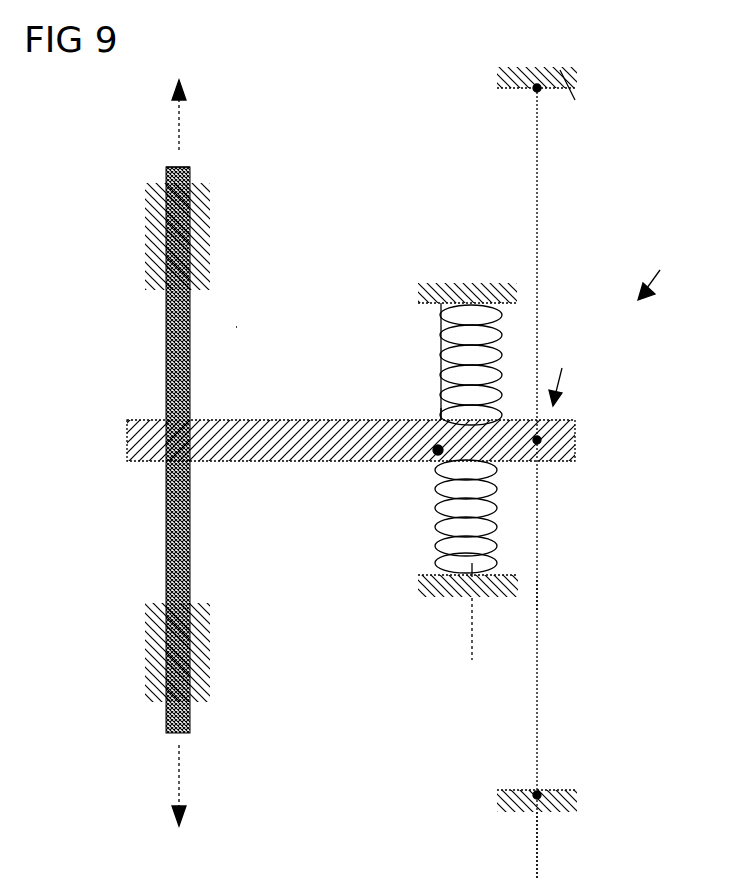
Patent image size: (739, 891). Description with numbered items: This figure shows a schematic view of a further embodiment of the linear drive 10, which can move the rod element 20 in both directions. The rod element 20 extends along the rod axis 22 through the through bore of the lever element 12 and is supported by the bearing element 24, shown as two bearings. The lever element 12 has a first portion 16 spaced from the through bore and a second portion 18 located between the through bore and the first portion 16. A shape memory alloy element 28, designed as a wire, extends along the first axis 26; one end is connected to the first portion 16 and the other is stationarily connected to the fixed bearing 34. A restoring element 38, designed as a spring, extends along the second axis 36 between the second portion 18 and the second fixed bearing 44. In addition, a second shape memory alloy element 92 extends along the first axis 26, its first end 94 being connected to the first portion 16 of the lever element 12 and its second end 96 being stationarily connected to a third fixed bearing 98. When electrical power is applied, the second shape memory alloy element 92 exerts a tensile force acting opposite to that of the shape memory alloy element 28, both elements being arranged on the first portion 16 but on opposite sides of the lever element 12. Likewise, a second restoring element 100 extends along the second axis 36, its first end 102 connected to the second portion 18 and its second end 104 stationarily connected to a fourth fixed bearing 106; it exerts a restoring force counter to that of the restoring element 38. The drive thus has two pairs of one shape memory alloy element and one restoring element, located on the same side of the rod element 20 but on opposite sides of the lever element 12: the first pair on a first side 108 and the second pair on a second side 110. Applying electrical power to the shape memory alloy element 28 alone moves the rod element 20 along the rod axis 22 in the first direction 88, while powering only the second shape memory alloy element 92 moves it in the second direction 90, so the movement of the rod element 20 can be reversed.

The linear drive 10 is at (676, 271).
The lever element 12 is at (578, 438).
The first portion 16 is at (571, 369).
The second portion 18 is at (413, 453).
The rod element 20 is at (174, 546).
The rod axis 22 is at (179, 160).
The bearing element 24 is at (146, 228).
The first axis 26 is at (537, 828).
The shape memory alloy element 28 is at (537, 588).
The fixed bearing 34 is at (565, 797).
The second axis 36 is at (472, 645).
The restoring element 38 is at (440, 530).
The second fixed bearing 44 is at (428, 594).
The first direction 88 is at (180, 790).
The second direction 90 is at (180, 112).
The second shape memory alloy element 92 is at (537, 177).
The first end 94 is at (571, 416).
The second end 96 is at (560, 95).
The third fixed bearing 98 is at (556, 84).
The second restoring element 100 is at (442, 368).
The first end 102 is at (440, 417).
The second end 104 is at (442, 315).
The fourth fixed bearing 106 is at (442, 298).
The first side 108 is at (408, 604).
The second side 110 is at (263, 312).